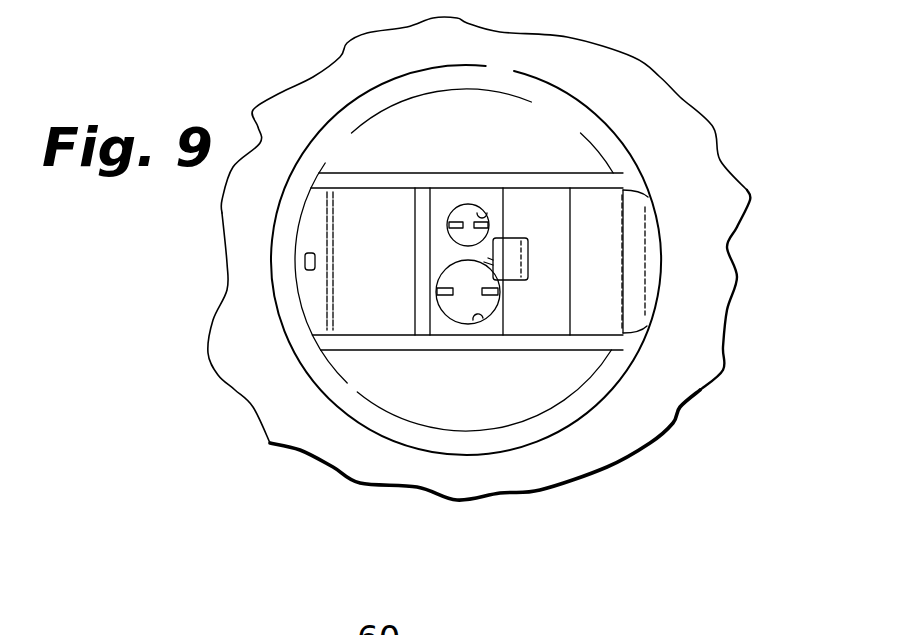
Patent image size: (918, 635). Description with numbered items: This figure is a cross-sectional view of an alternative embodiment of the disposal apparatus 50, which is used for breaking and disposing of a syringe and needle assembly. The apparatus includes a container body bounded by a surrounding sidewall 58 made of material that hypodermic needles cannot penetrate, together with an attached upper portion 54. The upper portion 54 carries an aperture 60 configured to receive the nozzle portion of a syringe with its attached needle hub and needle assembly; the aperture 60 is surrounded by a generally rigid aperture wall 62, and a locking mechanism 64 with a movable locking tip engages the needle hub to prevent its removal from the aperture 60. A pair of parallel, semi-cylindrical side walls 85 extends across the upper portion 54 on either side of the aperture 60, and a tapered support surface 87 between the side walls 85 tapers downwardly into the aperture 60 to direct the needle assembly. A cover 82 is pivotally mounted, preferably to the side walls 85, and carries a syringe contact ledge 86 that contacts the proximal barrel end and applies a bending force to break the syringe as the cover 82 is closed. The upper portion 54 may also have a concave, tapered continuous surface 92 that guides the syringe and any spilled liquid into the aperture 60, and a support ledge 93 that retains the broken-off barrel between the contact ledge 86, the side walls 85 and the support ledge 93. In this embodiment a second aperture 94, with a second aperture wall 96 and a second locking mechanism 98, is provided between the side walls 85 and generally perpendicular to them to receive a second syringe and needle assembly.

The disposal apparatus 50 is at (733, 107).
The upper portion 54 is at (729, 324).
The sidewall 58 is at (617, 447).
The aperture 60 is at (463, 312).
The aperture wall 62 is at (482, 317).
The locking mechanism 64 is at (447, 305).
The cover 82 is at (648, 297).
The side walls 85 is at (348, 173).
The syringe contact ledge 86 is at (497, 272).
The tapered support surface 87 is at (360, 223).
The continuous surface 92 is at (392, 392).
The support ledge 93 is at (317, 305).
The second aperture 94 is at (483, 213).
The second aperture wall 96 is at (470, 204).
The second locking mechanism 98 is at (463, 203).